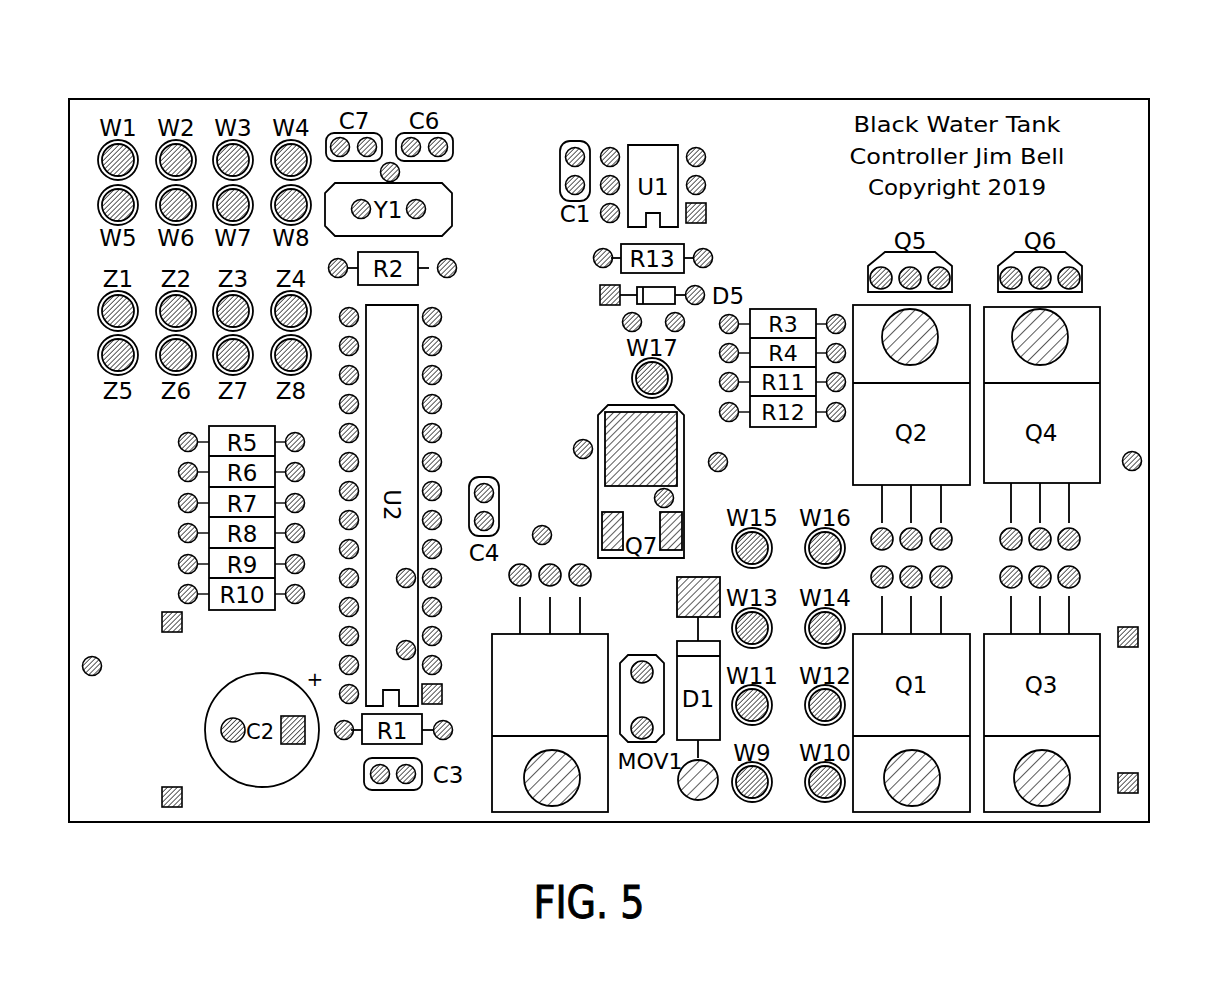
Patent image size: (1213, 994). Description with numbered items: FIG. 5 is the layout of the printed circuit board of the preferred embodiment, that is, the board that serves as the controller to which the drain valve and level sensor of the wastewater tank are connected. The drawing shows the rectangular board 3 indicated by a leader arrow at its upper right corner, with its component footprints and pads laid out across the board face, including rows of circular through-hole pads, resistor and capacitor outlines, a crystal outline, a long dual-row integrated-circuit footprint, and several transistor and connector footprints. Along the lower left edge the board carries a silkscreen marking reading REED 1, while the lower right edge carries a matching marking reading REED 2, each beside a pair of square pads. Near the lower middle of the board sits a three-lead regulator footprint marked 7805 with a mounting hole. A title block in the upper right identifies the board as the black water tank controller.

The printed circuit board 3 is at (1147, 76).
The reed switch 1 pads 1 is at (170, 709).
The reed switch 2 pads 2 is at (1128, 710).
The voltage regulator 7805 is at (550, 688).